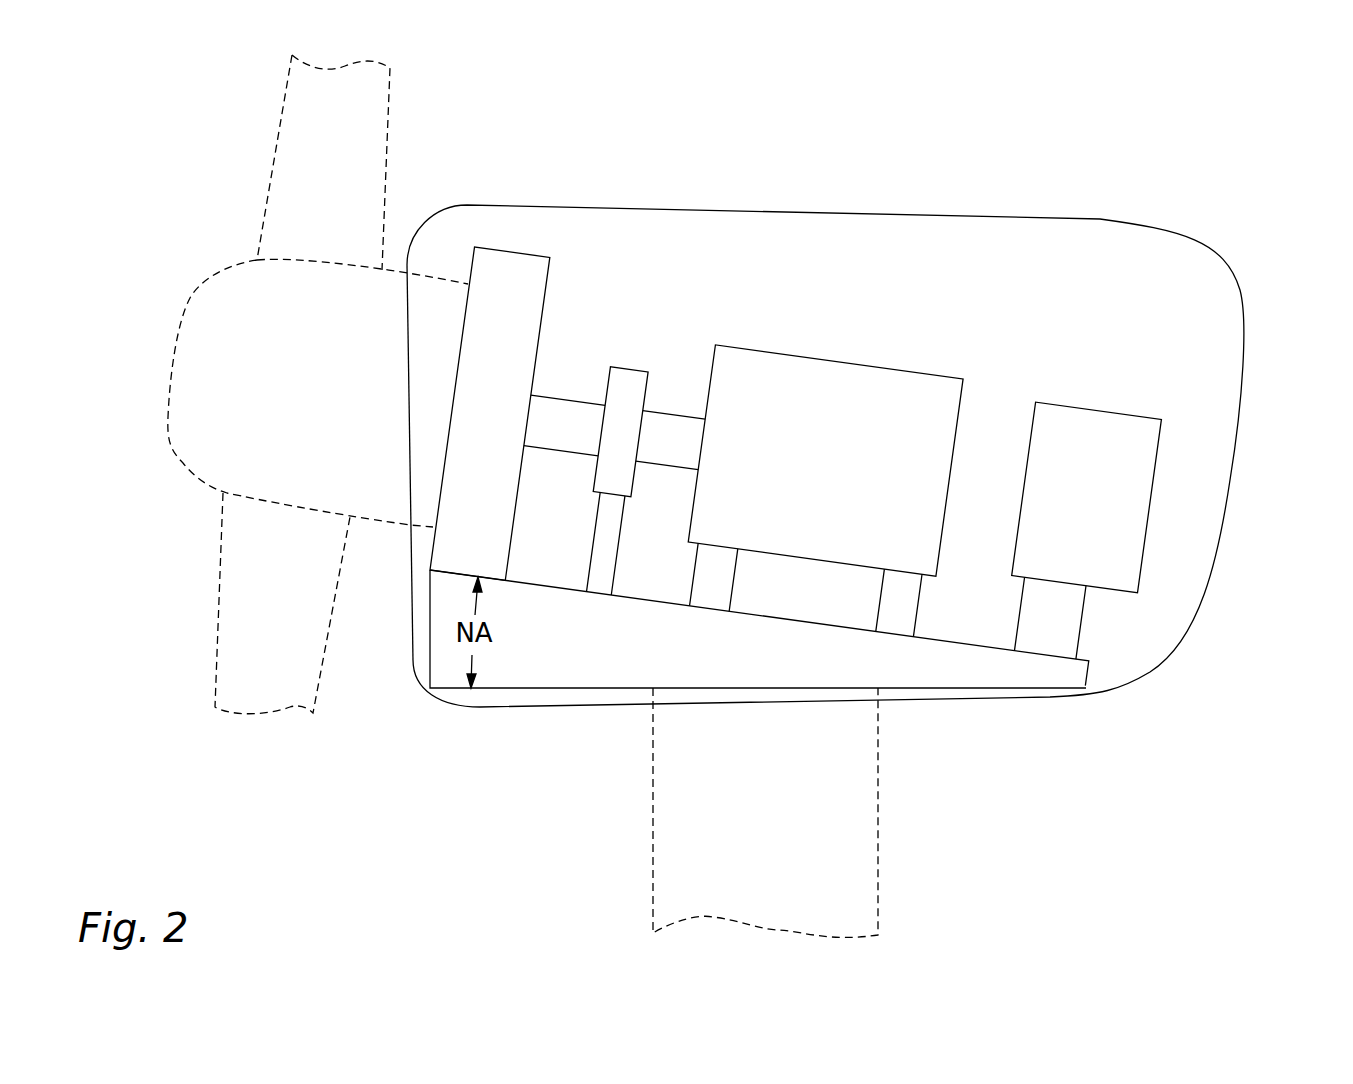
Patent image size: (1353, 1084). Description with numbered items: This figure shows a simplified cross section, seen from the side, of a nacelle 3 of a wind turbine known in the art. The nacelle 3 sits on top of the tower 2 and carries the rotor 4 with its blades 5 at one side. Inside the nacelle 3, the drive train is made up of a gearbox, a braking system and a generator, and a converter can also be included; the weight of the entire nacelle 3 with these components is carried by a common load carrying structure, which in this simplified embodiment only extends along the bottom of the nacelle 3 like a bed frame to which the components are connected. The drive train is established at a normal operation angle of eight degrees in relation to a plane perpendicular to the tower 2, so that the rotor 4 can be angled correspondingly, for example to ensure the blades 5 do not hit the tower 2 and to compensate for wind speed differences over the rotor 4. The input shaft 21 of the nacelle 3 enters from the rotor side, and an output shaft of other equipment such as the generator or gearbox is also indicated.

The tower 2 is at (797, 862).
The nacelle 3 is at (1275, 245).
The rotor 4 is at (237, 325).
The blades 5 is at (350, 155).
The input shaft 21 is at (430, 460).